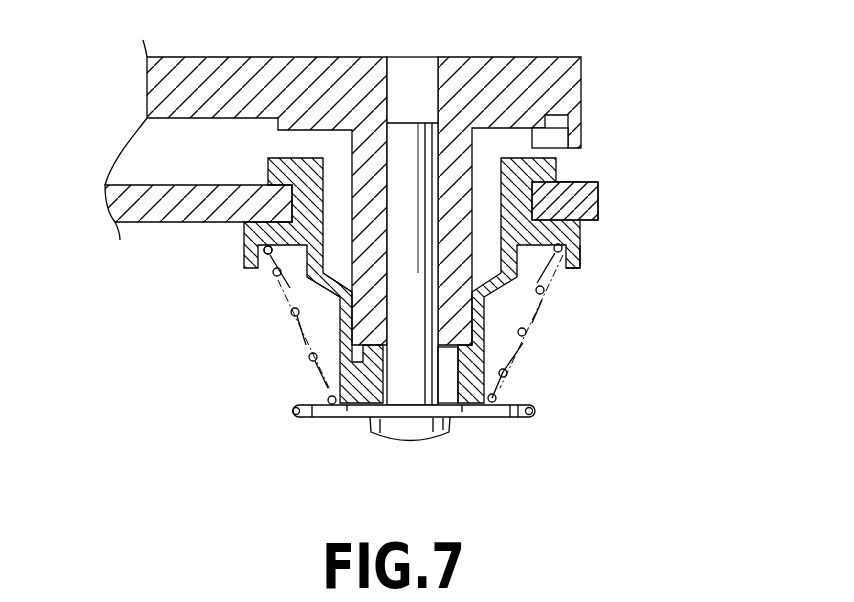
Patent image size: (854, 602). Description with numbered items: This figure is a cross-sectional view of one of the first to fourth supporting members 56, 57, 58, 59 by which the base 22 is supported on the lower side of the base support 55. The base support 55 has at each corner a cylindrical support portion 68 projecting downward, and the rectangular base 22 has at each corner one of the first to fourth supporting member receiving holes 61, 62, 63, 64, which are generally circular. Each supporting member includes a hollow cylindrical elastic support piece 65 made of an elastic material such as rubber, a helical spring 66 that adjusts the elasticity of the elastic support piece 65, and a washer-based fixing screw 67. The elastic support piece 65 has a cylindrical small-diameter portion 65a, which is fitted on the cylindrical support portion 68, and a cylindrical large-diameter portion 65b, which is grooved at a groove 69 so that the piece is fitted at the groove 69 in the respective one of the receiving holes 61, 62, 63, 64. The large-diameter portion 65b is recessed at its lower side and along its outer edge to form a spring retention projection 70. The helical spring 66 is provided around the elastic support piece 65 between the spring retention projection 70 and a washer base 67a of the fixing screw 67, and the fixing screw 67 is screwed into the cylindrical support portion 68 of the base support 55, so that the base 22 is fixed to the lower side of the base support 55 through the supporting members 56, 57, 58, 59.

The base support 55 is at (225, 57).
The base 22 is at (142, 223).
The first supporting member receiving hole 61 is at (307, 280).
The second supporting member receiving hole 62 is at (412, 280).
The third supporting member receiving hole 63 is at (412, 280).
The fourth supporting member receiving hole 64 is at (246, 234).
The elastic support piece 65 is at (542, 284).
The cylindrical small-diameter portion 65a is at (296, 417).
The cylindrical large-diameter portion 65b is at (297, 245).
The helical spring 66 is at (520, 357).
The fixing screw 67 is at (377, 433).
The washer base 67a is at (486, 418).
The cylindrical support portion 68 is at (311, 287).
The groove 69 is at (555, 186).
The spring retention projection 70 is at (580, 258).
The first supporting member 56 is at (523, 451).
The second supporting member 57 is at (414, 411).
The third supporting member 58 is at (414, 411).
The fourth supporting member 59 is at (531, 418).